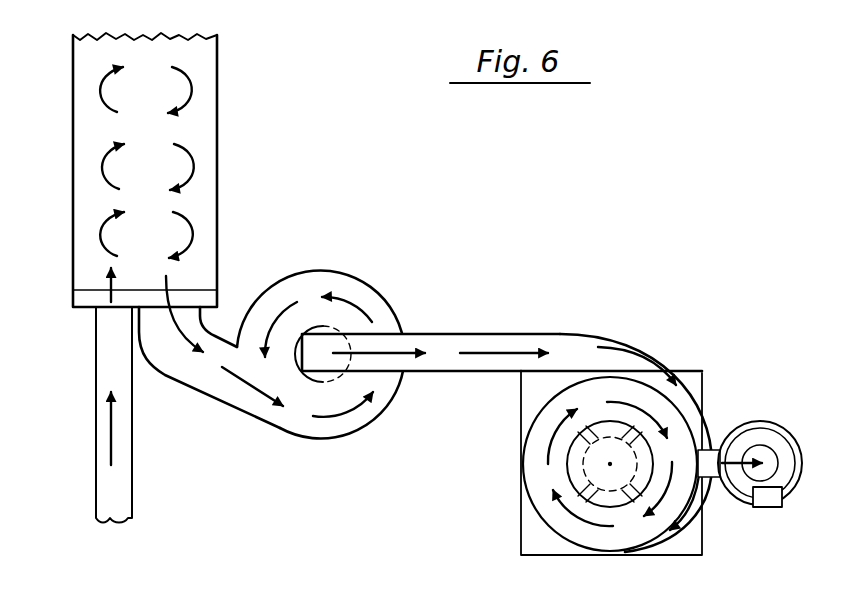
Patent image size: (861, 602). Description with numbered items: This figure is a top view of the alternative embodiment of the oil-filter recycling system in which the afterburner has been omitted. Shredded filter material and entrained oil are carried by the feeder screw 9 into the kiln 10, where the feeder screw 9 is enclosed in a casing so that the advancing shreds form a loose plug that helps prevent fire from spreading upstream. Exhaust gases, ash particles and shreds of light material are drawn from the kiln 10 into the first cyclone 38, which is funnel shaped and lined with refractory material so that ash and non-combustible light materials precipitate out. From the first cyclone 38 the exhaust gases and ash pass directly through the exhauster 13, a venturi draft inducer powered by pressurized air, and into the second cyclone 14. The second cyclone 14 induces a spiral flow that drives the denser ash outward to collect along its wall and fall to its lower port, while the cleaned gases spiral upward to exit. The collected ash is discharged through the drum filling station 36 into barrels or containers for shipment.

The feeder screw 9 is at (100, 446).
The kiln 10 is at (217, 127).
The exhauster 13 is at (322, 350).
The second cyclone 14 is at (543, 481).
The drum filling station 36 is at (757, 410).
The first cyclone 38 is at (297, 400).